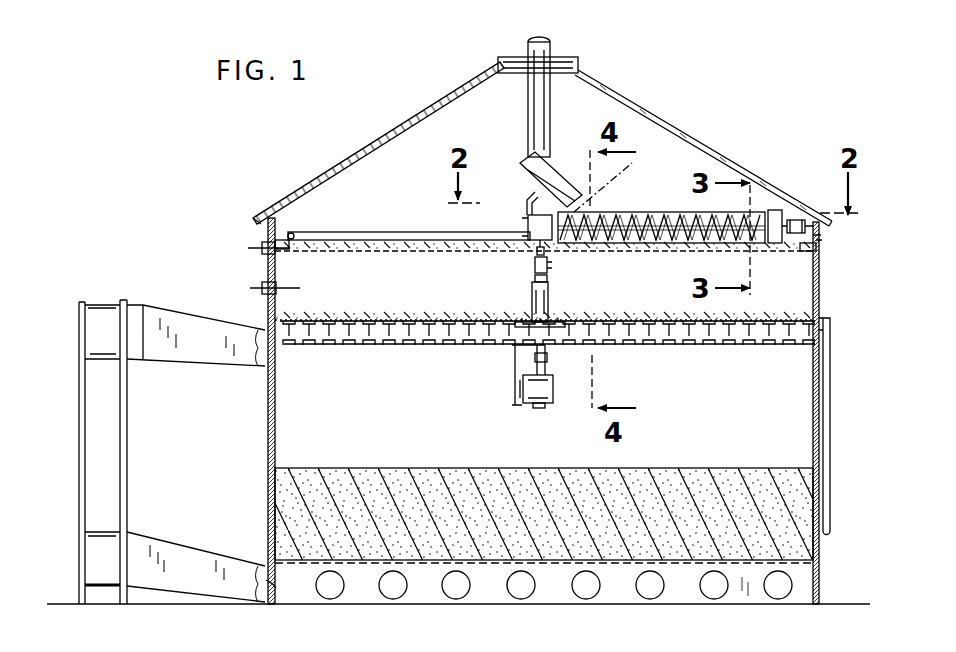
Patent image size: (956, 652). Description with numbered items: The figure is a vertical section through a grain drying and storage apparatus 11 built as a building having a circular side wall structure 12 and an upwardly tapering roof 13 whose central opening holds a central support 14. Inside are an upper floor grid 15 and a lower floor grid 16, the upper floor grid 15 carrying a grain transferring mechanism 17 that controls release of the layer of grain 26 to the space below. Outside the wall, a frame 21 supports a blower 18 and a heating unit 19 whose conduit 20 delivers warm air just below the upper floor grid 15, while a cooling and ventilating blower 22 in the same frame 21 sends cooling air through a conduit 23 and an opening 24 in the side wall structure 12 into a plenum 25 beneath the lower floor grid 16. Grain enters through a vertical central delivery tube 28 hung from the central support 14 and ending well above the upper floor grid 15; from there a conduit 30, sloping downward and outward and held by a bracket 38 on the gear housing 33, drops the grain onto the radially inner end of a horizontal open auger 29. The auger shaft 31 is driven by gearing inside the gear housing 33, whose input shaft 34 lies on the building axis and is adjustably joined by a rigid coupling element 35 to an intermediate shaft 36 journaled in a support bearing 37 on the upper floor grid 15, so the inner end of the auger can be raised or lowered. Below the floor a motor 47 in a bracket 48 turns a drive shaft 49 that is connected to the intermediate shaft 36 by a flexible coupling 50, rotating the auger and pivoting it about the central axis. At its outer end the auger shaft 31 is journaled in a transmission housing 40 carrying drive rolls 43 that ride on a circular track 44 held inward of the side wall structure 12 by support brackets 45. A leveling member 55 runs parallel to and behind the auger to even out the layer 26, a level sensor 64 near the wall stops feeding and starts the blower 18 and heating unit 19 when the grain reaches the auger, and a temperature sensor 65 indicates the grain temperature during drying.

The grain drying and storage apparatus 11 is at (714, 126).
The side wall structure 12 is at (267, 425).
The roof 13 is at (372, 152).
The central support 14 is at (570, 60).
The upper floor grid 15 is at (360, 326).
The lower floor grid 16 is at (495, 568).
The grain transferring mechanism 17 is at (375, 348).
The blower 18 is at (99, 302).
The heating unit 19 is at (139, 304).
The conduit 20 is at (190, 330).
The frame 21 is at (80, 439).
The cooling and ventilating blower 22 is at (92, 574).
The conduit 23 is at (168, 545).
The opening 24 is at (280, 586).
The plenum 25 is at (428, 592).
The layer of granular material 26 is at (430, 322).
The central delivery tube 28 is at (529, 45).
The auger 29 is at (665, 240).
The conduit 30 is at (568, 178).
The auger shaft 31 is at (652, 220).
The gear housing 33 is at (527, 224).
The input shaft 34 is at (536, 252).
The coupling element 35 is at (535, 265).
The intermediate shaft 36 is at (534, 278).
The support bearing 37 is at (549, 305).
The bracket 38 is at (522, 198).
The transmission housing 40 is at (776, 210).
The drive rolls 43 is at (797, 220).
The circular track 44 is at (378, 232).
The support brackets 45 is at (290, 244).
The motor 47 is at (543, 408).
The bracket 48 is at (515, 368).
The drive shaft 49 is at (560, 389).
The flexible coupling 50 is at (548, 368).
The leveling member 55 is at (619, 181).
The level sensor 64 is at (282, 254).
The temperature sensor 65 is at (292, 292).